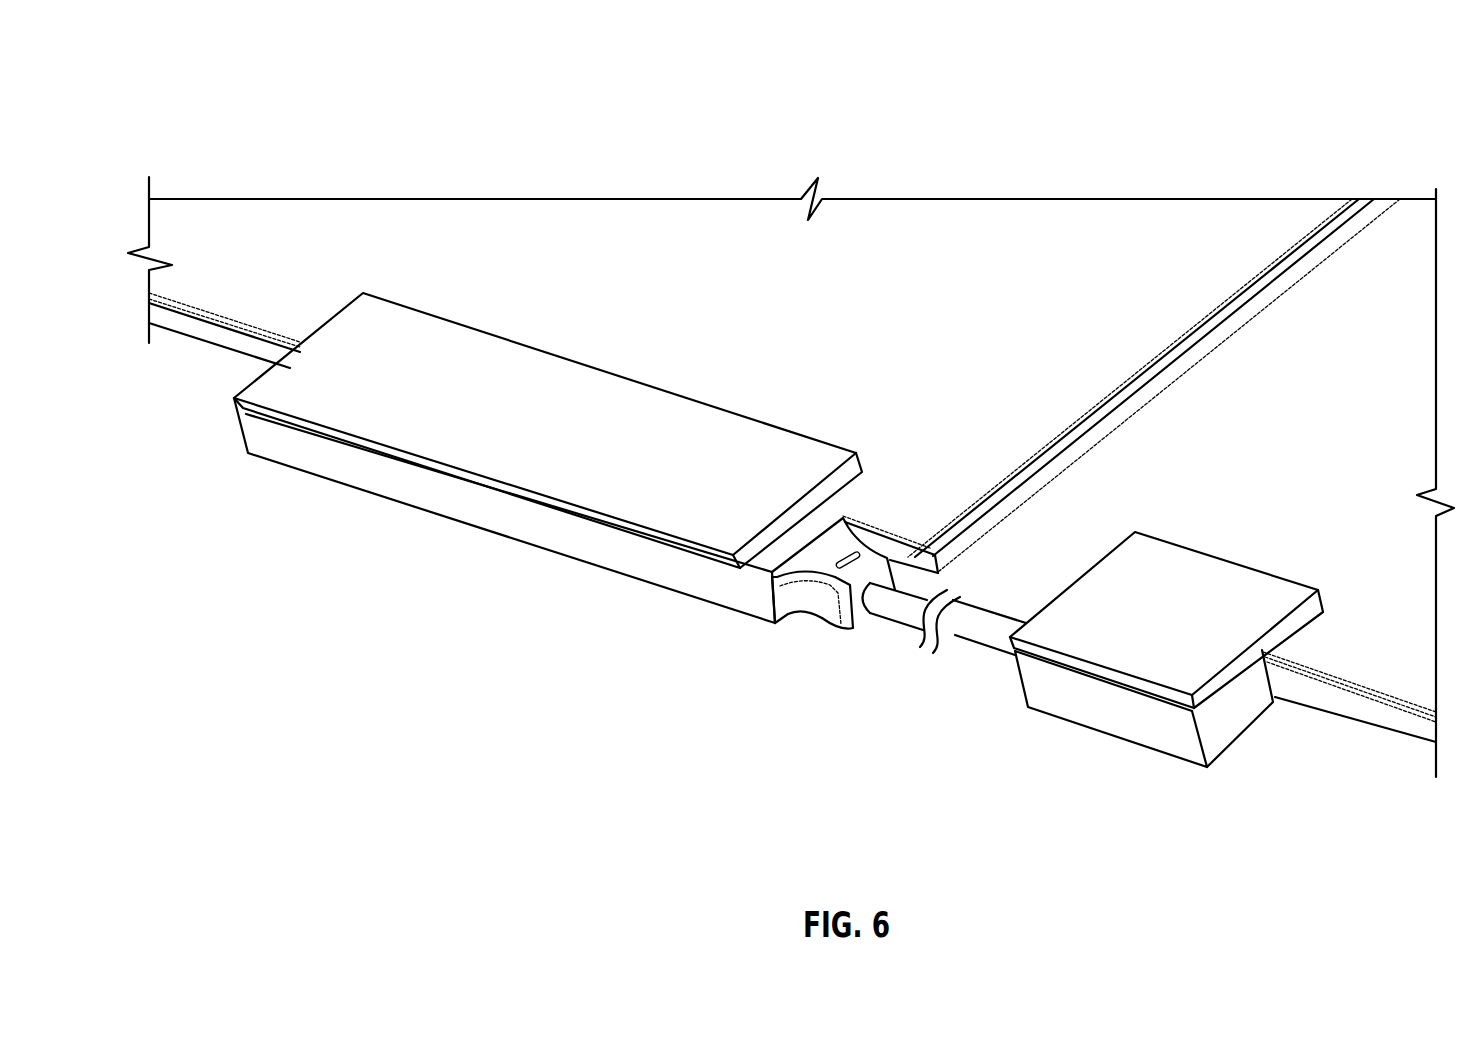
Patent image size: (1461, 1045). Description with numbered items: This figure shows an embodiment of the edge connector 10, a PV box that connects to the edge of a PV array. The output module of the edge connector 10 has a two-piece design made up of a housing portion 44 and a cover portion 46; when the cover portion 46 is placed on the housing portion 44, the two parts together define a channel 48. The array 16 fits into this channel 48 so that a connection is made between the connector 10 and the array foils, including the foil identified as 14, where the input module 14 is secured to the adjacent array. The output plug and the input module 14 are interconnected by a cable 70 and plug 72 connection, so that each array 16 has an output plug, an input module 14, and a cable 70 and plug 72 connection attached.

The edge connector 10 is at (229, 99).
The input module 14 is at (467, 217).
The first array 16 is at (1410, 215).
The housing portion 44 is at (425, 494).
The cover portion 46 is at (290, 387).
The channel 48 is at (1298, 645).
The cable 70 is at (913, 617).
The plug 72 is at (820, 608).